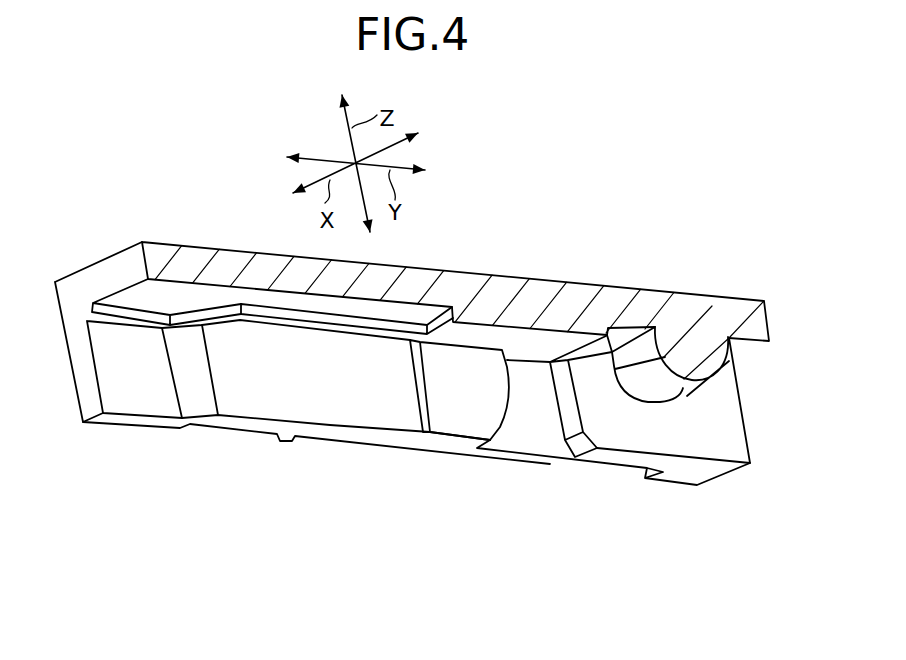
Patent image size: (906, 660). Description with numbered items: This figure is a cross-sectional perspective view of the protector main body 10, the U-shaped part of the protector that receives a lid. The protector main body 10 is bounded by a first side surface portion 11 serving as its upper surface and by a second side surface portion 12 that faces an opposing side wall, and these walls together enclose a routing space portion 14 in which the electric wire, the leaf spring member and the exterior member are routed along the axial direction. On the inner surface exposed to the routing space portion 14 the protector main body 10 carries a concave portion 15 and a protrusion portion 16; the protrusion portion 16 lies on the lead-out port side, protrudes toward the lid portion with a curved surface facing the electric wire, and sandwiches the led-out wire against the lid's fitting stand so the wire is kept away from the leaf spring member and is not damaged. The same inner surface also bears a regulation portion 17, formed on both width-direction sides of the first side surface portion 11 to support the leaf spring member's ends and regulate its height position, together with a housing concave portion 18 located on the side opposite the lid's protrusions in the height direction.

The protector main body 10 is at (734, 245).
The first side surface portion 11 is at (196, 241).
The second side surface portion 12 is at (73, 388).
The routing space portion 14 is at (460, 376).
The concave portion 15 is at (530, 433).
The protrusion portion 16 is at (680, 387).
The regulation portion 17 is at (241, 321).
The housing concave portion 18 is at (151, 291).